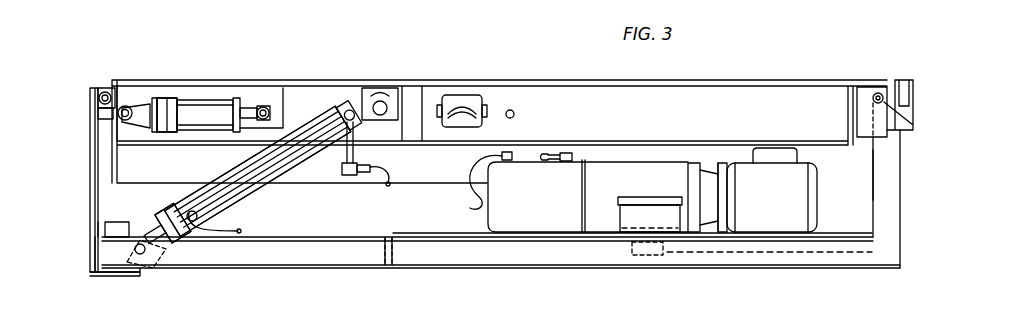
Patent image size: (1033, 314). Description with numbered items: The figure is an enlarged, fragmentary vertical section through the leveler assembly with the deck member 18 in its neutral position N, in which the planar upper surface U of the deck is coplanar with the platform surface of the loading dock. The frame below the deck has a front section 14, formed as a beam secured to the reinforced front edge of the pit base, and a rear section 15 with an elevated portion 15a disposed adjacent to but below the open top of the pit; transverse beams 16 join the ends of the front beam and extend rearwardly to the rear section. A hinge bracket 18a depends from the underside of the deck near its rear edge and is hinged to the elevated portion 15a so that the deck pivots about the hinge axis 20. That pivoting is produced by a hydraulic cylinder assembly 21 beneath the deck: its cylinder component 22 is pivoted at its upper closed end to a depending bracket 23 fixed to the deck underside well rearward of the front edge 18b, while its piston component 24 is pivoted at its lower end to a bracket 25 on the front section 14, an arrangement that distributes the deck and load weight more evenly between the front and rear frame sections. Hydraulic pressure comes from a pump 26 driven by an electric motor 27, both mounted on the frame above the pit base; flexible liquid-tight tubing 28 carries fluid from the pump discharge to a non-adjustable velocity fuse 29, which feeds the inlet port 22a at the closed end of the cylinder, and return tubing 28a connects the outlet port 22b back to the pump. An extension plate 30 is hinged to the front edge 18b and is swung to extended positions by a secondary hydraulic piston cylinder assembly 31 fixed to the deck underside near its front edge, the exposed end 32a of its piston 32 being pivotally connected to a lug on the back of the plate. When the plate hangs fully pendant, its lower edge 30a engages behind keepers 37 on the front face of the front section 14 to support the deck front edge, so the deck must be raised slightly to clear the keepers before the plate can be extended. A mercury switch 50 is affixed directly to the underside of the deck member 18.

The front section 14 is at (94, 246).
The rear section 15 is at (888, 194).
The elevated portion 15a is at (892, 143).
The transverse beams 16 is at (356, 256).
The deck member 18 is at (566, 78).
The hinge bracket 18a is at (860, 100).
The front edge 18b is at (142, 108).
The hinge axis 20 is at (944, 141).
The hydraulic cylinder assembly 21 is at (306, 122).
The cylinder component 22 is at (270, 194).
The inlet port 22a is at (348, 108).
The outlet port 22b is at (213, 190).
The depending bracket 23 is at (369, 132).
The piston component 24 is at (152, 230).
The bracket 25 is at (160, 279).
The pump 26 is at (558, 217).
The electric motor 27 is at (768, 213).
The flexible liquid-tight tubing 28 is at (386, 186).
The return tubing 28a is at (244, 226).
The non-adjustable velocity fuse 29 is at (356, 150).
The extension plate 30 is at (87, 160).
The lower edge 30a is at (92, 228).
The secondary hydraulic piston cylinder assembly 31 is at (204, 106).
The piston 32 is at (177, 110).
The exposed end 32a is at (96, 88).
The keepers 37 is at (96, 243).
The mercury switch 50 is at (474, 100).
The upper surface U is at (457, 82).
The neutral position N is at (758, 69).